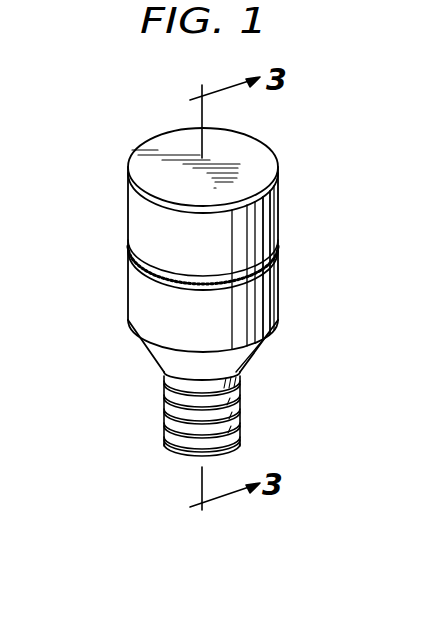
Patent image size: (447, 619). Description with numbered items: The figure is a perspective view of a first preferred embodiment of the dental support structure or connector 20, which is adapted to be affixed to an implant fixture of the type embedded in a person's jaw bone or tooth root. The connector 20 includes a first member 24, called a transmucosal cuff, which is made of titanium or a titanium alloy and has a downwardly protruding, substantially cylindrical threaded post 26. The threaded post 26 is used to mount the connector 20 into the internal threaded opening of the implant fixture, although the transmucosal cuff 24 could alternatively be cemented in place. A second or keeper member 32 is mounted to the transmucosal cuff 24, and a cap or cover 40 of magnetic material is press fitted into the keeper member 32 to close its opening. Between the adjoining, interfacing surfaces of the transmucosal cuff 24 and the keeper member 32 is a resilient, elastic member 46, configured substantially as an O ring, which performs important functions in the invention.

The dental support structure 20 is at (114, 214).
The cap 40 is at (258, 160).
The keeper member 32 is at (275, 200).
The resilient, elastic member 46 is at (268, 271).
The first member 24 is at (262, 318).
The threaded post 26 is at (162, 409).